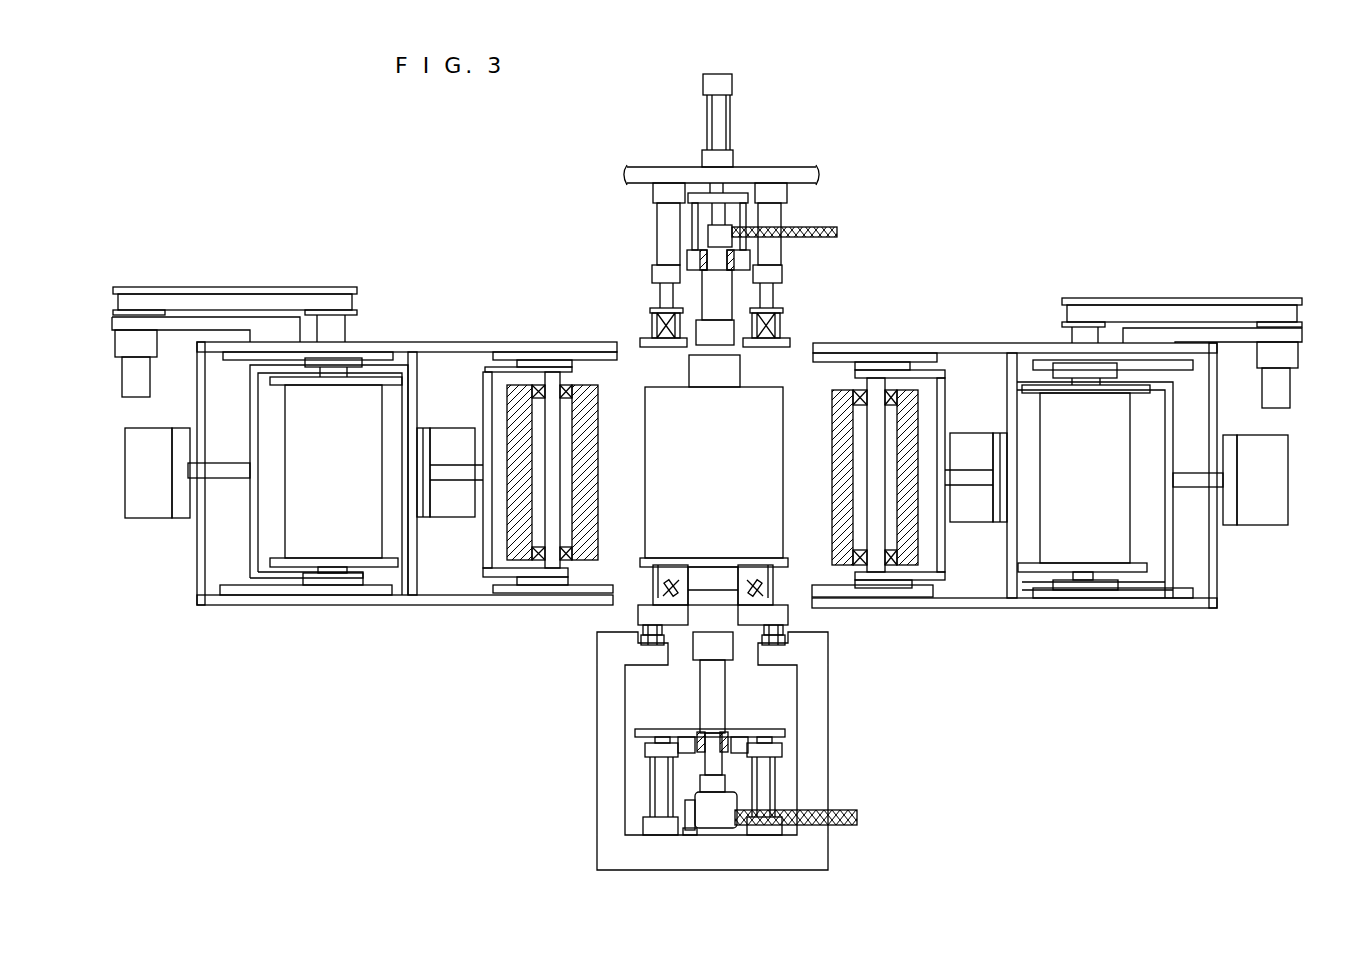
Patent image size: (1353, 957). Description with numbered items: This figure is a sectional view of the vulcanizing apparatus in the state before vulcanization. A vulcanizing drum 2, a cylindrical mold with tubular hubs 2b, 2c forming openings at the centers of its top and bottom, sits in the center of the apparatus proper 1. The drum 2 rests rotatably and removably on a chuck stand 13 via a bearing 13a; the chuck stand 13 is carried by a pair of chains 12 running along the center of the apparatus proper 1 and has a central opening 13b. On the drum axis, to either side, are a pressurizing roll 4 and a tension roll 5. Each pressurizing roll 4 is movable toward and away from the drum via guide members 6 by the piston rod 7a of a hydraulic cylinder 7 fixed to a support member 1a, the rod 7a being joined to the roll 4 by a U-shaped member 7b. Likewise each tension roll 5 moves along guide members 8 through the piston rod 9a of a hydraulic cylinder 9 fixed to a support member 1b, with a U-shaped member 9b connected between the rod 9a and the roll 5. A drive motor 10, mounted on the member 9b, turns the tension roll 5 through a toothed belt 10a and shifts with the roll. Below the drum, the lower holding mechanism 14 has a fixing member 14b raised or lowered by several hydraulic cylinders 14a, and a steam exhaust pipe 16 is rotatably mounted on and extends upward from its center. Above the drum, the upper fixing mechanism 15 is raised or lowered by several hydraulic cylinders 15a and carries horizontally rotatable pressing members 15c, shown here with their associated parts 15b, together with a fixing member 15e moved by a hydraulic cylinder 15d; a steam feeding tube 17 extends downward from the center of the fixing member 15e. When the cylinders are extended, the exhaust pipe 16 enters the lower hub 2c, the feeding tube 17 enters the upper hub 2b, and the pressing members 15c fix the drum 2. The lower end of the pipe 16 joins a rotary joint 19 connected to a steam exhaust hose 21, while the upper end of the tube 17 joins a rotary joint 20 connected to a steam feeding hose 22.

The apparatus proper 1 is at (982, 337).
The support member 1a is at (415, 370).
The support member 1b is at (197, 383).
The vulcanizing drum 2 is at (734, 483).
The upper tubular hub 2b is at (711, 378).
The lower tubular hub 2c is at (713, 570).
The pressurizing roll 4 is at (510, 543).
The tension roll 5 is at (340, 477).
The guide member 6 is at (533, 360).
The hydraulic cylinder 7 is at (442, 428).
The piston rod 7a is at (453, 470).
The U-shaped member 7b is at (492, 573).
The guide member 8 is at (385, 352).
The hydraulic cylinder 9 is at (143, 512).
The piston rod 9a is at (230, 473).
The U-shaped member 9b is at (247, 547).
The drive motor 10 is at (118, 345).
The toothed belt 10a is at (249, 297).
The chain 12 is at (652, 640).
The chuck stand 13 is at (640, 612).
The bearing 13a is at (653, 592).
The opening 13b is at (700, 612).
The lower holding mechanism 14 is at (786, 748).
The hydraulic cylinder 14a is at (645, 800).
The fixing member 14b is at (780, 726).
The upper fixing mechanism 15 is at (827, 158).
The hydraulic cylinder 15a is at (660, 215).
The cylinder rod 15b is at (652, 308).
The pressing member 15c is at (640, 337).
The hydraulic cylinder 15d is at (731, 113).
The fixing member 15e is at (742, 260).
The steam exhaust pipe 16 is at (722, 695).
The steam feeding tube 17 is at (723, 298).
The lower rotary joint 19 is at (712, 818).
The upper rotary joint 20 is at (722, 227).
The steam exhaust hose 21 is at (857, 813).
The steam feeding hose 22 is at (838, 231).